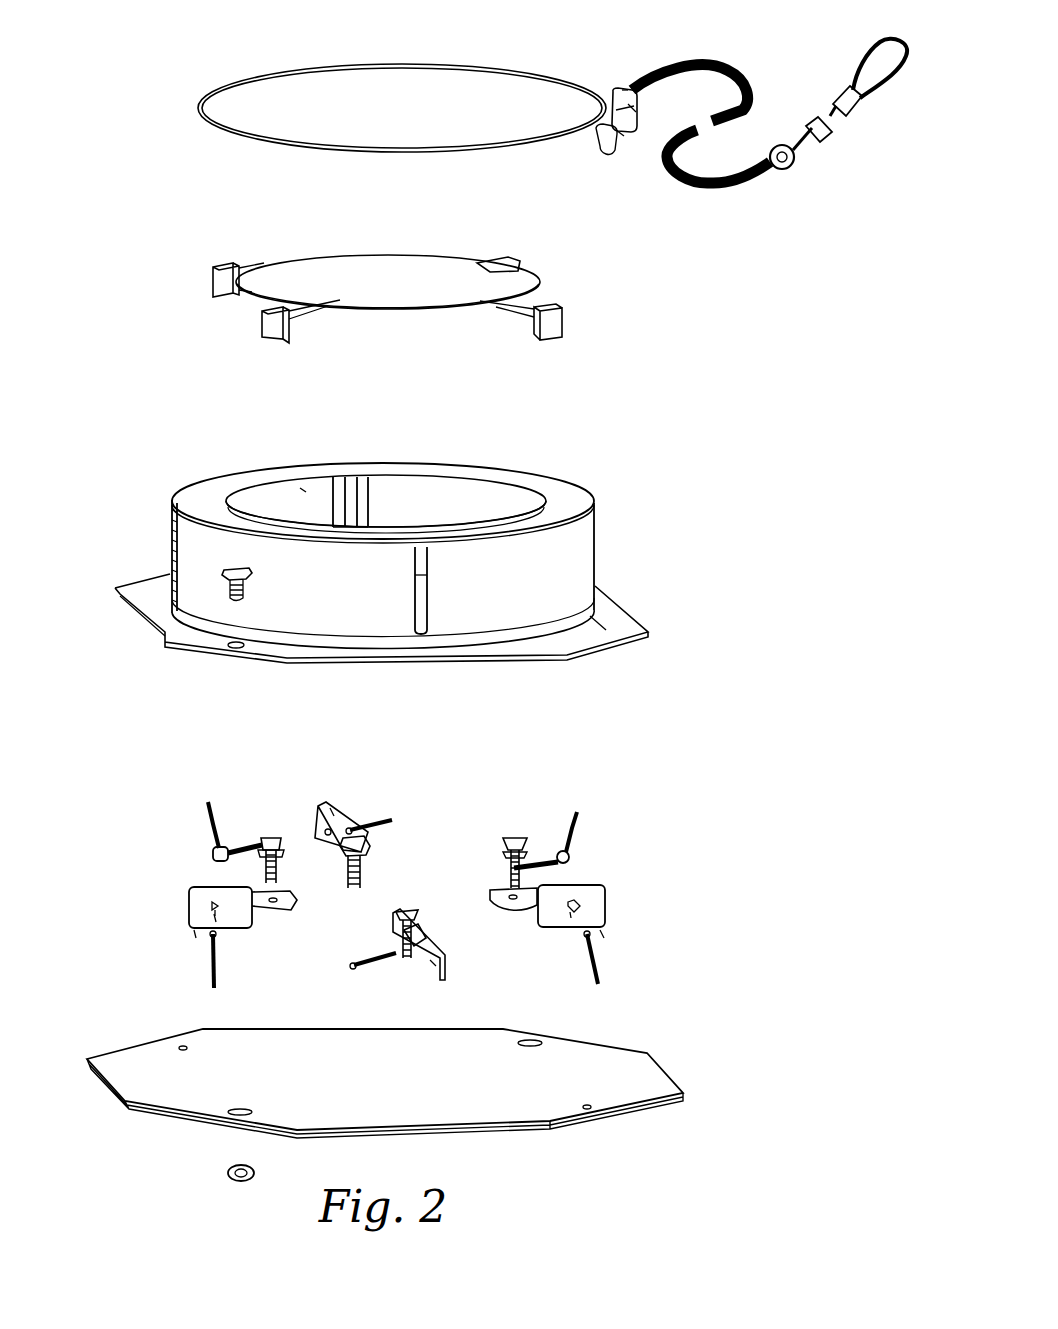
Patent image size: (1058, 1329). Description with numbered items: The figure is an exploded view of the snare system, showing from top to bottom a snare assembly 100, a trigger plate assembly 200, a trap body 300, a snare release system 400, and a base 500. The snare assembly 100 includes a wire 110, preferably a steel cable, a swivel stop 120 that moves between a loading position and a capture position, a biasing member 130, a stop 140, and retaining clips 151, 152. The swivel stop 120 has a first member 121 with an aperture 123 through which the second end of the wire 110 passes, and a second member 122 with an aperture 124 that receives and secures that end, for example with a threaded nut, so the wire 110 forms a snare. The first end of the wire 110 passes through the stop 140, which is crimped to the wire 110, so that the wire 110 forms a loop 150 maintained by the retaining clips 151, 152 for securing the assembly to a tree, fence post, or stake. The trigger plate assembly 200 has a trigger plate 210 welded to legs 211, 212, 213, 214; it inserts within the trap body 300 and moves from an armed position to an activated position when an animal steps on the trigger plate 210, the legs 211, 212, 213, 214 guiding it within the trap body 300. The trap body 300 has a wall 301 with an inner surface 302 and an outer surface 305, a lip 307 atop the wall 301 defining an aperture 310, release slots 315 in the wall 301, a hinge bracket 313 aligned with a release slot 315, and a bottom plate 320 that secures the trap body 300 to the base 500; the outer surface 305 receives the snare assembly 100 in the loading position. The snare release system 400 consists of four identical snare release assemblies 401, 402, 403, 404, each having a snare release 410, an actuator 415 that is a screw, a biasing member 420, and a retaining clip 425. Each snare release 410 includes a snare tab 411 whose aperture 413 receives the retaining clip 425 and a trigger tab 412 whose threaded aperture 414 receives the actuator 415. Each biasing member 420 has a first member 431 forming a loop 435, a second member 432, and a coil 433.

The snare assembly 100 is at (356, 64).
The wire 110 is at (425, 64).
The swivel stop 120 is at (612, 96).
The first member 121 is at (623, 88).
The second member 122 is at (600, 136).
The aperture 123 is at (638, 117).
The aperture 124 is at (626, 138).
The biasing member 130 is at (712, 62).
The stop 140 is at (790, 168).
The loop 150 is at (870, 48).
The retaining clip 151 is at (832, 142).
The retaining clip 152 is at (852, 112).
The trigger plate assembly 200 is at (400, 296).
The trigger plate 210 is at (330, 262).
The leg 211 is at (558, 322).
The leg 212 is at (268, 330).
The leg 213 is at (218, 280).
The leg 214 is at (506, 262).
The trap body 300 is at (582, 470).
The wall 301 is at (398, 530).
The inner surface 302 is at (284, 472).
The outer surface 305 is at (598, 556).
The lip 307 is at (216, 476).
The aperture 310 is at (420, 490).
The hinge bracket 313 is at (396, 478).
The release slot 315 is at (343, 478).
The bottom plate 320 is at (626, 640).
The snare release system 400 is at (619, 869).
The snare release assembly 401 is at (606, 916).
The snare release assembly 402 is at (442, 976).
The snare release assembly 403 is at (321, 808).
The snare release assembly 404 is at (189, 906).
The snare release 410 is at (328, 806).
The snare tab 411 is at (606, 898).
The trigger tab 412 is at (282, 910).
The aperture 413 is at (212, 892).
The aperture 414 is at (292, 896).
The actuator 415 is at (271, 836).
The biasing member 420 is at (394, 857).
The retaining clip 425 is at (380, 828).
The first member 431 is at (282, 852).
The second member 432 is at (208, 808).
The coil 433 is at (212, 856).
The loop 435 is at (262, 846).
The base 500 is at (403, 1089).